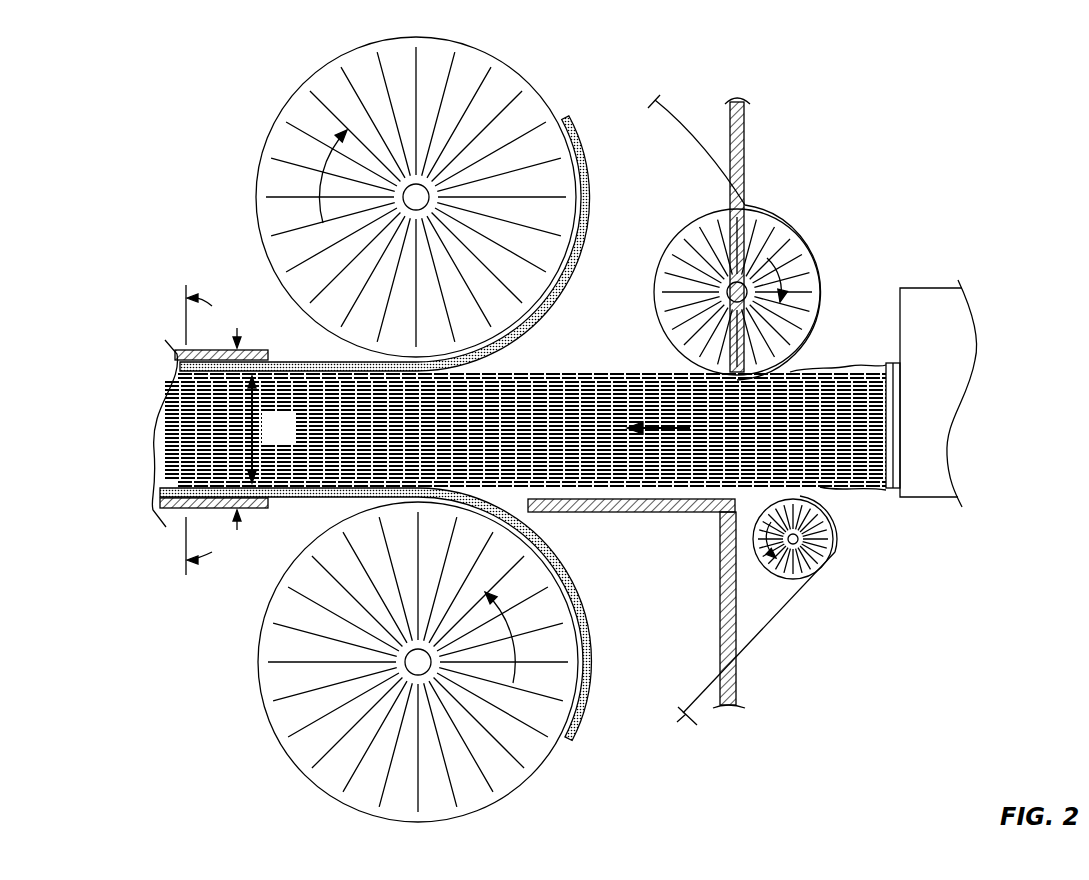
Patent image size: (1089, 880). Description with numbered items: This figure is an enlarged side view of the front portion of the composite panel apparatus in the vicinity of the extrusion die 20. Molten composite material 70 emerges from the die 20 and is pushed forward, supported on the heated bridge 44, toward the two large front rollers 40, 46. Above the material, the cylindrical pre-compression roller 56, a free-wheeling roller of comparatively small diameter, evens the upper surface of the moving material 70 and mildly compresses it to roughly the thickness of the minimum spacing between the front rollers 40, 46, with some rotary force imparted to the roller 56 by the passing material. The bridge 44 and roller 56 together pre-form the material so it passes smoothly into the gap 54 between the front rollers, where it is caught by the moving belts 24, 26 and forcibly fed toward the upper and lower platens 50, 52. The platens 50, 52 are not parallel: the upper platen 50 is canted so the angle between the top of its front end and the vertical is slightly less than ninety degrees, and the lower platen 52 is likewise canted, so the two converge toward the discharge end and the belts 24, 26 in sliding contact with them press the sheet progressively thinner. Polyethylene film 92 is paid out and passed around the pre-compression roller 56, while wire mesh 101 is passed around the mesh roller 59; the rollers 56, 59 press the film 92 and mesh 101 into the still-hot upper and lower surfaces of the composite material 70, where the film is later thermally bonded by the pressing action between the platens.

The extrusion die 20 is at (933, 292).
The upper belt 24 is at (332, 362).
The lower belt 26 is at (287, 498).
The upper front roller 40 is at (512, 258).
The heated bridge 44 is at (675, 512).
The lower front roller 46 is at (370, 613).
The upper platen 50 is at (266, 350).
The lower platen 52 is at (257, 509).
The gap 54 is at (430, 380).
The pre-compression roller 56 is at (770, 228).
The mesh roller 59 is at (836, 552).
The molten composite material 70 is at (822, 363).
The polyethylene film 92 is at (704, 177).
The wire mesh 101 is at (781, 639).